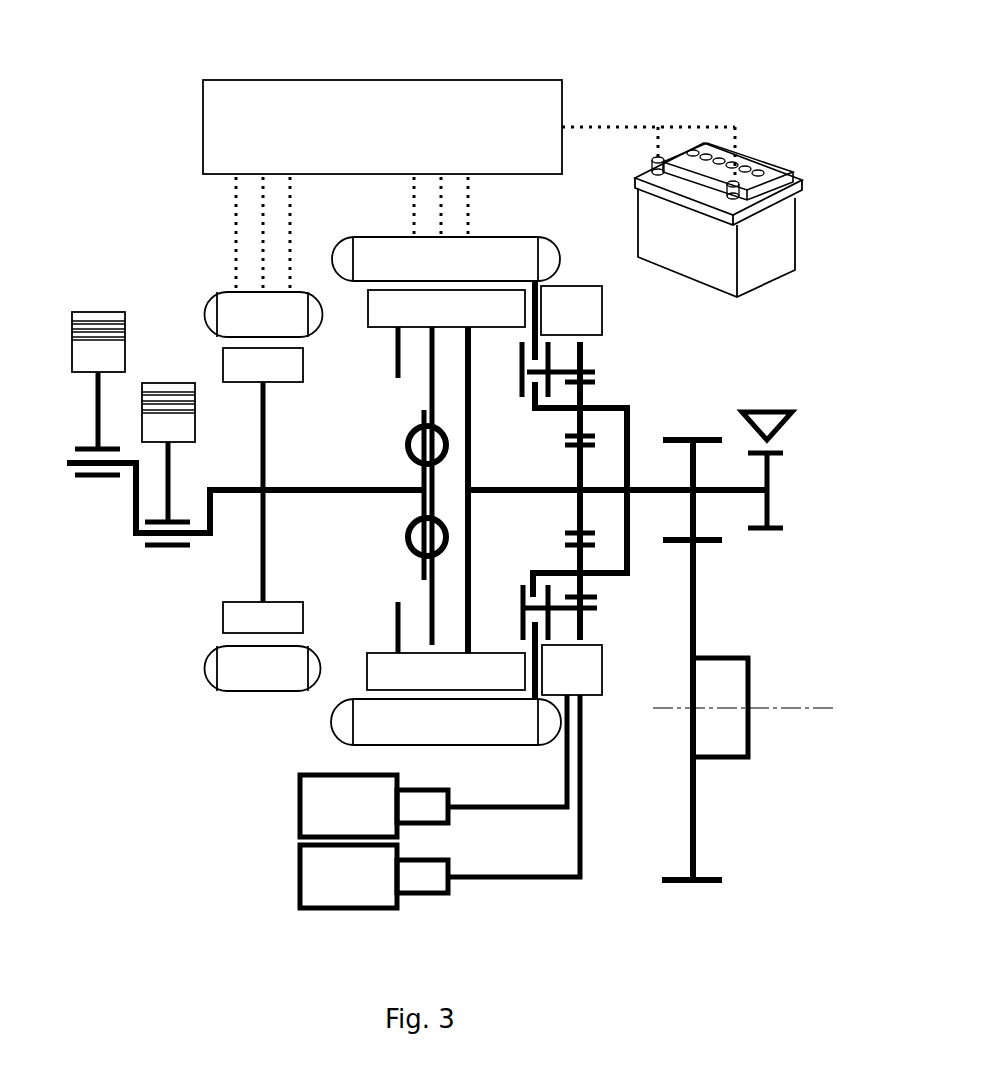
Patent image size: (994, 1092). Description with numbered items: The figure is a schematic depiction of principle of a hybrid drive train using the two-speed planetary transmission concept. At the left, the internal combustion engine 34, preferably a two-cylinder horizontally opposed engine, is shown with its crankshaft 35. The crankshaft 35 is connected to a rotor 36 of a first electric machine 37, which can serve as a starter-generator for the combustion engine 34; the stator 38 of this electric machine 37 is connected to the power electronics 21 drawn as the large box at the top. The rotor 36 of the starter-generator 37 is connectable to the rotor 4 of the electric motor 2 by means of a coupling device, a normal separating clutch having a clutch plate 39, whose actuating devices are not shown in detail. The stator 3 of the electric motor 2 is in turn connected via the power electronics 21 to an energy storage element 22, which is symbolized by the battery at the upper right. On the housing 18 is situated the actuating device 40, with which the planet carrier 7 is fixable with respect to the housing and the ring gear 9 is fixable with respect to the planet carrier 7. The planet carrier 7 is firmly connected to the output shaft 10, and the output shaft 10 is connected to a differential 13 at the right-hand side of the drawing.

The electric motor 2 is at (492, 752).
The stator 3 is at (517, 256).
The rotor 4 is at (388, 668).
The planet carrier 7 is at (628, 410).
The ring gear 9 is at (598, 608).
The output shaft 10 is at (708, 492).
The differential 13 is at (732, 740).
The housing 18 is at (524, 342).
The power electronics 21 is at (348, 98).
The energy storage element 22 is at (775, 237).
The internal combustion engine 34 is at (64, 296).
The crankshaft 35 is at (138, 538).
The rotor 36 is at (245, 432).
The first electric machine 37 is at (231, 518).
The stator 38 is at (228, 236).
The clutch plate 39 is at (422, 388).
The actuating device 40 is at (585, 318).